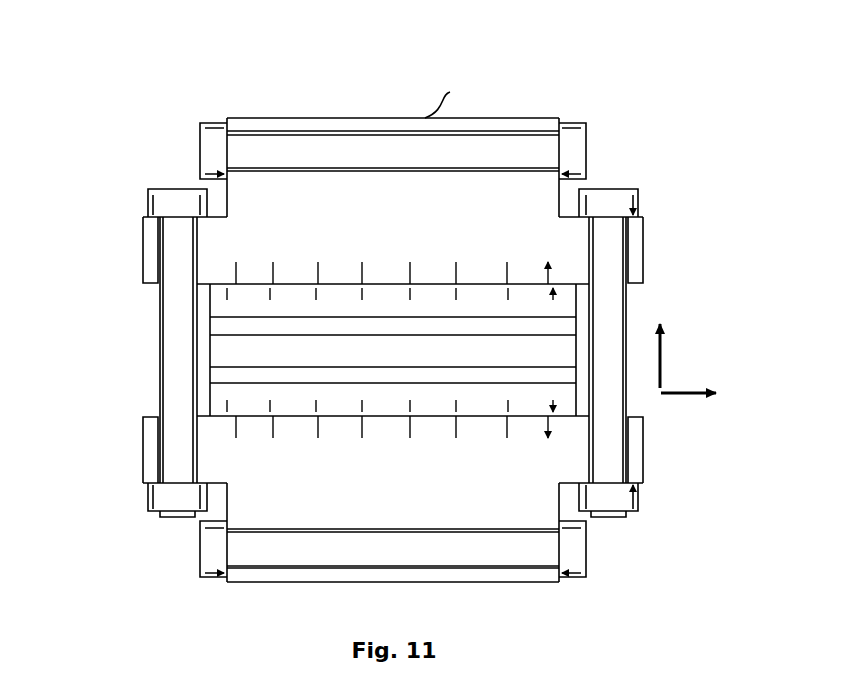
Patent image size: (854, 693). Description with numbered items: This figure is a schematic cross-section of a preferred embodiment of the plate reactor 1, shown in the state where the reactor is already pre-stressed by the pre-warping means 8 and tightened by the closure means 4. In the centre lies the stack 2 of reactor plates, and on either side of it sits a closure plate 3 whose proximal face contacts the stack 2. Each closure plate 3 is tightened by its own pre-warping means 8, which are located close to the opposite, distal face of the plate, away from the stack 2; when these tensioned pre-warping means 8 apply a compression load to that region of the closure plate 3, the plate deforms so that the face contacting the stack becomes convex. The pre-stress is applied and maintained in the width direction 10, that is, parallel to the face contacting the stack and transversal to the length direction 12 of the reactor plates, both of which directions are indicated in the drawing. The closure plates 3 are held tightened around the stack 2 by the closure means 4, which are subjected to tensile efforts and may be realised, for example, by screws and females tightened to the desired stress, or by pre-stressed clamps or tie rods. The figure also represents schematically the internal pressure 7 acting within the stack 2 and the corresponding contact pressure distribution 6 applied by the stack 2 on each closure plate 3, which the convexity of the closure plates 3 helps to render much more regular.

The plate reactor 1 is at (668, 107).
The stack 2 is at (205, 350).
The closure plate 3 is at (212, 255).
The closure means 4 is at (177, 388).
The contact pressure distribution 6 is at (226, 296).
The internal pressure 7 is at (236, 273).
The pre-warping means 8 is at (210, 155).
The width direction 10 is at (700, 400).
The length direction 12 is at (665, 332).